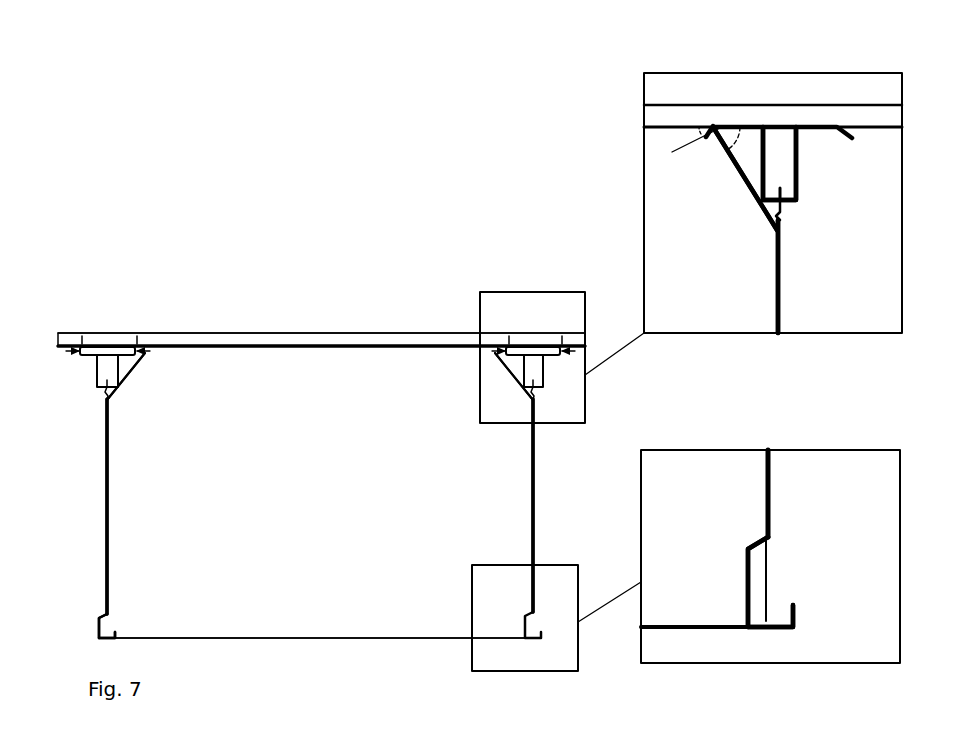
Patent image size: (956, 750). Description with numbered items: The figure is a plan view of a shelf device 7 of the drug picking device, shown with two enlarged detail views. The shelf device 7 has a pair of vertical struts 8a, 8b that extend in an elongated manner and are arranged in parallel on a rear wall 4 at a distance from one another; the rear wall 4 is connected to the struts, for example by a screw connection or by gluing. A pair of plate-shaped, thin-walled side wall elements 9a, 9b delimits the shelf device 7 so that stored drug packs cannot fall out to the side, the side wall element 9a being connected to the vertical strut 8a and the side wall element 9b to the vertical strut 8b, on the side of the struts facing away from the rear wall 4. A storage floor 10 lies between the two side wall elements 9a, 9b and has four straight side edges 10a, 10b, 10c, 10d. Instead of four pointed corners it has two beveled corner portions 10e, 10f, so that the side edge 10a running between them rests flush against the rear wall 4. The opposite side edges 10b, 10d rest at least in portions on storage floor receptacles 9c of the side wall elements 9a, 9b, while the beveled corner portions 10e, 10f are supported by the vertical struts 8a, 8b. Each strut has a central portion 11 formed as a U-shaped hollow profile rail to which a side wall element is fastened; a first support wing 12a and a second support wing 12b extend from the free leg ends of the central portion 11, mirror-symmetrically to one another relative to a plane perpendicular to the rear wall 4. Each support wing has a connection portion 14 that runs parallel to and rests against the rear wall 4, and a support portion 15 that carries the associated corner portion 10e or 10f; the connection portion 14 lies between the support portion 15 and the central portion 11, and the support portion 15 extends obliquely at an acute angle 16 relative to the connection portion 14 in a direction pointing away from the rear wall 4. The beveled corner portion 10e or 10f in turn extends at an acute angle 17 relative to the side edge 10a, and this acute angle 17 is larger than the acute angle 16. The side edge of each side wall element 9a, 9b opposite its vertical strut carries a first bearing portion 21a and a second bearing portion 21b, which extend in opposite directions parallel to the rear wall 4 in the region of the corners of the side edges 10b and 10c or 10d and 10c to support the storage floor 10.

The rear wall 4 is at (302, 338).
The shelf device 7 is at (372, 276).
The vertical strut 8a is at (79, 377).
The vertical strut 8b is at (530, 322).
The side wall element 9a is at (104, 500).
The side wall element 9b is at (537, 500).
The storage floor receptacle 9c is at (123, 606).
The storage floor 10 is at (188, 370).
The side edge 10a is at (322, 348).
The side edge 10b is at (530, 473).
The side edge 10c is at (320, 637).
The side edge 10d is at (108, 470).
The corner portion 10e is at (130, 372).
The corner portion 10f is at (505, 368).
The central portion 11 is at (778, 152).
The first support wing 12a is at (82, 343).
The second support wing 12b is at (137, 343).
The connection portion 14 is at (741, 126).
The support portion 15 is at (713, 135).
The acute angle 16 is at (690, 134).
The acute angle 17 is at (735, 125).
The first bearing portion 21a is at (97, 627).
The second bearing portion 21b is at (118, 637).